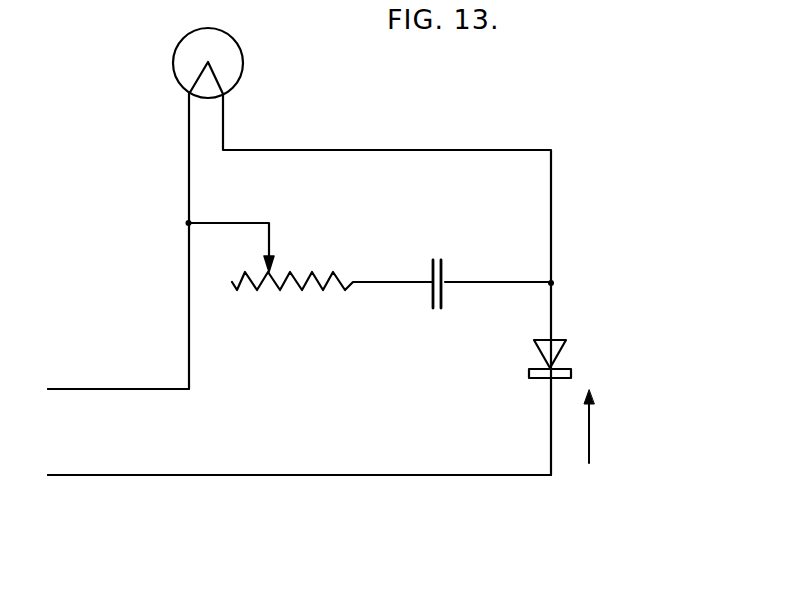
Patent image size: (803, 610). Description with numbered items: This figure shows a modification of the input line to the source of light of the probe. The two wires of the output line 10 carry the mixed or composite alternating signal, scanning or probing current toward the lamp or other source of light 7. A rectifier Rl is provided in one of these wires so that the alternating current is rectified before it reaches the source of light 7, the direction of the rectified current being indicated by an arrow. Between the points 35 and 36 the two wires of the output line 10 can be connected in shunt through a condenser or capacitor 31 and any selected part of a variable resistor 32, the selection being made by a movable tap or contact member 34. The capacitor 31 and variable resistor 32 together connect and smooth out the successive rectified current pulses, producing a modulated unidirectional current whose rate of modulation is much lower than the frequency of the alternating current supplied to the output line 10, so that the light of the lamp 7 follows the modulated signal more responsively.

The source of light 7 is at (245, 64).
The point 36 is at (186, 222).
The movable tap or contact member 34 is at (276, 255).
The variable resistor 32 is at (296, 290).
The condenser or capacitor 31 is at (431, 294).
The point 35 is at (555, 282).
The rectifier Rl is at (562, 363).
The output line 10 is at (85, 389).